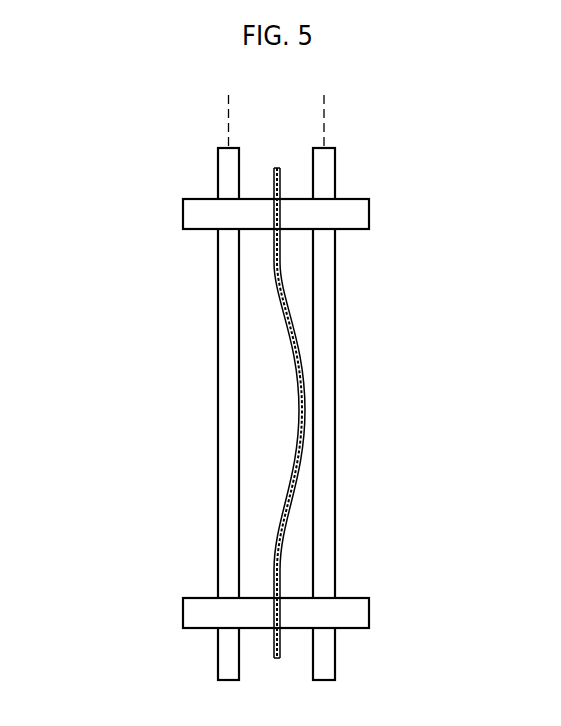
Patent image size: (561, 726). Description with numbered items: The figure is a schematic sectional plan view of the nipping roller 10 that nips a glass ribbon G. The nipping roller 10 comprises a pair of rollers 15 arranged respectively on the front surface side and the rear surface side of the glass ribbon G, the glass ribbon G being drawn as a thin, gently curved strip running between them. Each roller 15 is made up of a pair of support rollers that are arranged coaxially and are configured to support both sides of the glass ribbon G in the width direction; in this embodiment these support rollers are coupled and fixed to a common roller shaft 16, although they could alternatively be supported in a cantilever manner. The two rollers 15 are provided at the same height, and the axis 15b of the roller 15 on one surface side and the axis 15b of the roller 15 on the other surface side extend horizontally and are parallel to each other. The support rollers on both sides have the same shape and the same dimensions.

The nipping roller 10 is at (444, 151).
The roller 15 is at (183, 213).
The axis 15b is at (228, 109).
The roller shaft 16 is at (218, 421).
The glass ribbon G is at (294, 518).